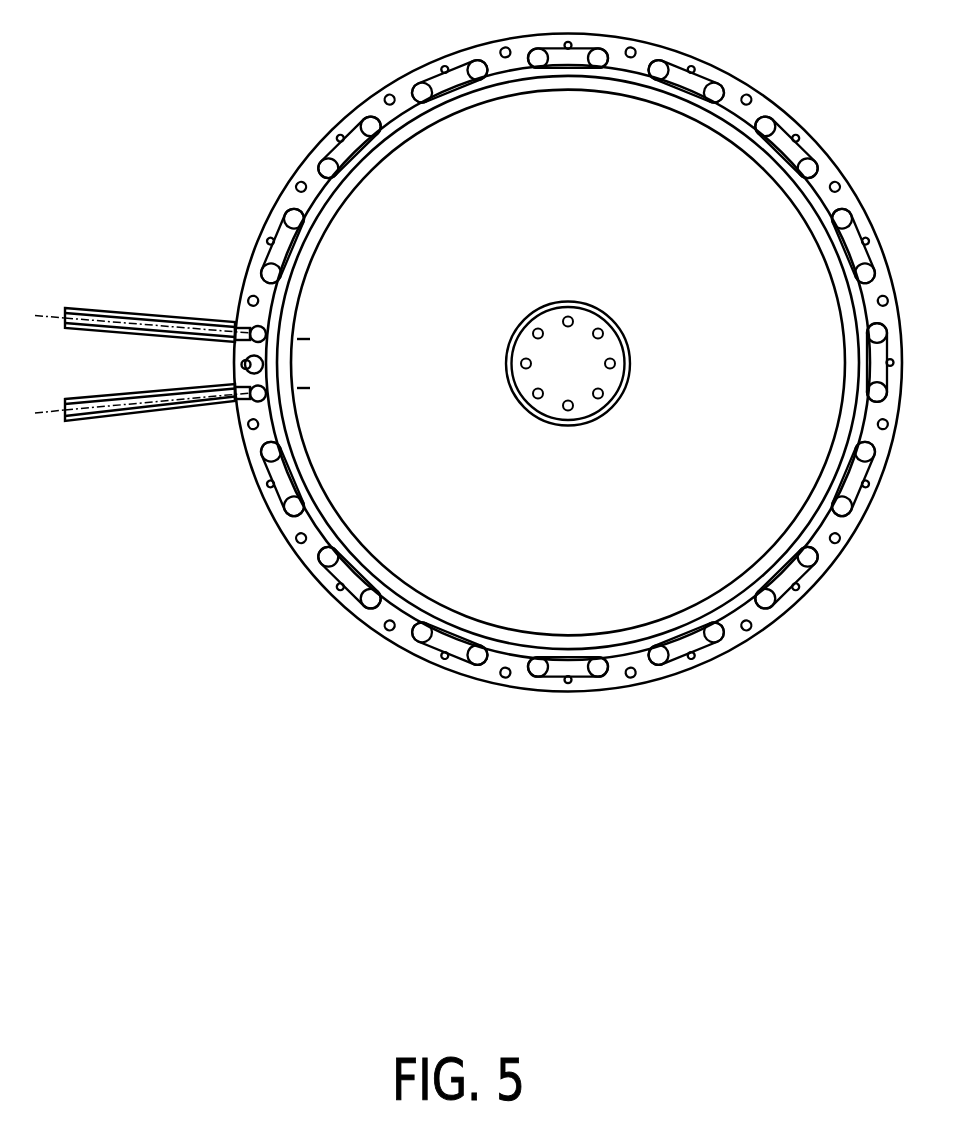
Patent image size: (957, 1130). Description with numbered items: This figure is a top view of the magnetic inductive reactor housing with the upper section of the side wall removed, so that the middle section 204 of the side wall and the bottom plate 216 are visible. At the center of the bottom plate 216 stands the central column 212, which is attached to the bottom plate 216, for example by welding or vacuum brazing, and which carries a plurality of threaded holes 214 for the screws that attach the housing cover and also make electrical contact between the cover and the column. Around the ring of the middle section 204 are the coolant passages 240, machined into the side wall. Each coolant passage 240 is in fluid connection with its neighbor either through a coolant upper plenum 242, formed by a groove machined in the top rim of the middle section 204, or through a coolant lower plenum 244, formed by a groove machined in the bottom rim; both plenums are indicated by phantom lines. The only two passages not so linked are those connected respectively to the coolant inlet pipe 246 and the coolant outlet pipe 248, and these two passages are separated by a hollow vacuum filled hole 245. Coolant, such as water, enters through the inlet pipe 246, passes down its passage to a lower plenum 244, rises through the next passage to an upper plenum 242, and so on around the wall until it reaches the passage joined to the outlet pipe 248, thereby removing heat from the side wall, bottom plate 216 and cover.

The middle section 204 is at (257, 227).
The central column 212 is at (571, 426).
The threaded holes 214 is at (534, 334).
The bottom plate 216 is at (594, 565).
The coolant passages 240 is at (367, 598).
The coolant upper plenum 242 is at (290, 478).
The coolant lower plenum 244 is at (295, 525).
The hollow vacuum filled hole 245 is at (234, 352).
The coolant inlet pipe 246 is at (160, 312).
The coolant outlet pipe 248 is at (157, 412).